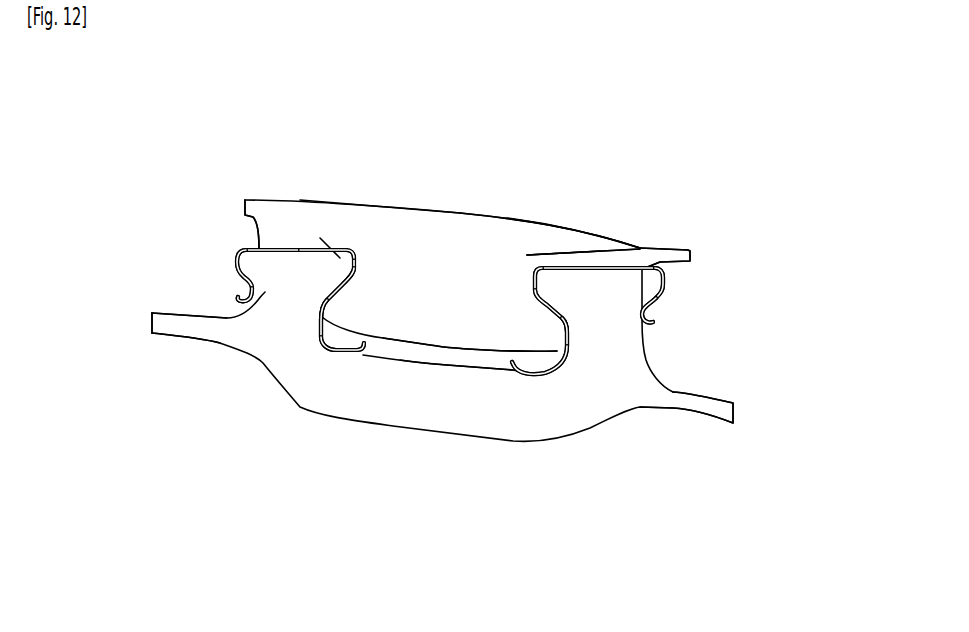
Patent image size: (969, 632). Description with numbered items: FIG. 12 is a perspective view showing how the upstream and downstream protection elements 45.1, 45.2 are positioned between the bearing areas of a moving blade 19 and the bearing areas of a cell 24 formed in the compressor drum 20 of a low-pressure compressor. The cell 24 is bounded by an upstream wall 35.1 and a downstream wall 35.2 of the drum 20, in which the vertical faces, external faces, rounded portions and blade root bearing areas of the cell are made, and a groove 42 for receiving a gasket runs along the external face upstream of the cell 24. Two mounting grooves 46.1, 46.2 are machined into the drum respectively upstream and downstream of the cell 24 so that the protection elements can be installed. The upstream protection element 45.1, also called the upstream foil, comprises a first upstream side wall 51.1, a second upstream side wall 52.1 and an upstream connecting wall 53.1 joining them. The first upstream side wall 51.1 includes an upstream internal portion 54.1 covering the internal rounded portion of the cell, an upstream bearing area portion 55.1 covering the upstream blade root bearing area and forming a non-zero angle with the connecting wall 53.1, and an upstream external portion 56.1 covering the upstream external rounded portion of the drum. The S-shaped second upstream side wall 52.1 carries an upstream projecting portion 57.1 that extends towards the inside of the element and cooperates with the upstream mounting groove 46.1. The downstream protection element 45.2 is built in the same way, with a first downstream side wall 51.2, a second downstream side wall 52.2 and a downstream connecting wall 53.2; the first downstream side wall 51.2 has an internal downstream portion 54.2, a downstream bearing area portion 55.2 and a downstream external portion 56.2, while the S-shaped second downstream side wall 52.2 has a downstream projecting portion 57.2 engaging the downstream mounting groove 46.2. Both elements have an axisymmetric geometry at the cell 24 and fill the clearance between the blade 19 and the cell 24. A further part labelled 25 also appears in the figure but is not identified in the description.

The moving blade 19 is at (460, 229).
The compressor drum 20 is at (273, 362).
The cell 24 is at (422, 358).
The top surface of cover plate 25 is at (420, 291).
The upstream wall 35.1 is at (577, 323).
The downstream wall 35.2 is at (263, 313).
The groove 42 is at (607, 272).
The upstream protection element 45.1 is at (628, 243).
The downstream protection element 45.2 is at (243, 234).
The upstream mounting groove 46.1 is at (641, 307).
The downstream mounting groove 46.2 is at (303, 274).
The first upstream side wall 51.1 is at (510, 300).
The first downstream side wall 51.2 is at (368, 298).
The second upstream side wall 52.1 is at (700, 272).
The second downstream side wall 52.2 is at (213, 245).
The upstream connecting wall 53.1 is at (588, 270).
The downstream connecting wall 53.2 is at (282, 248).
The upstream internal portion 54.1 is at (567, 360).
The internal downstream portion 54.2 is at (323, 345).
The upstream bearing area portion 55.1 is at (557, 311).
The downstream bearing area portion 55.2 is at (340, 302).
The upstream external portion 56.1 is at (527, 255).
The downstream external portion 56.2 is at (313, 250).
The upstream projecting portion 57.1 is at (645, 317).
The downstream projecting portion 57.2 is at (242, 283).